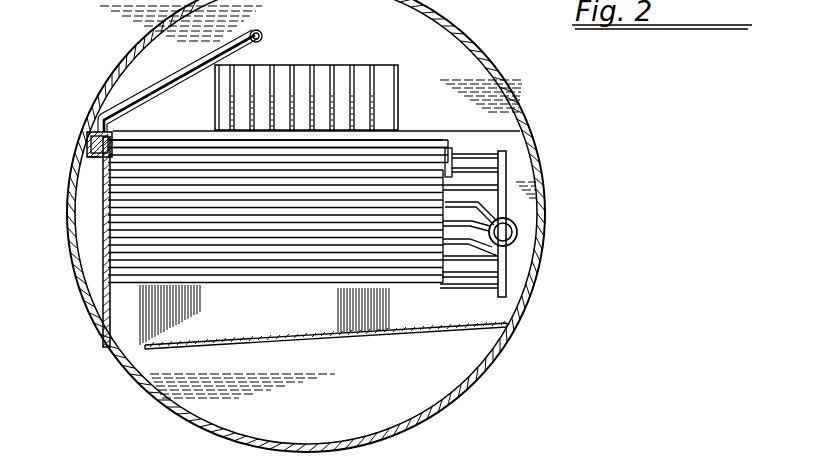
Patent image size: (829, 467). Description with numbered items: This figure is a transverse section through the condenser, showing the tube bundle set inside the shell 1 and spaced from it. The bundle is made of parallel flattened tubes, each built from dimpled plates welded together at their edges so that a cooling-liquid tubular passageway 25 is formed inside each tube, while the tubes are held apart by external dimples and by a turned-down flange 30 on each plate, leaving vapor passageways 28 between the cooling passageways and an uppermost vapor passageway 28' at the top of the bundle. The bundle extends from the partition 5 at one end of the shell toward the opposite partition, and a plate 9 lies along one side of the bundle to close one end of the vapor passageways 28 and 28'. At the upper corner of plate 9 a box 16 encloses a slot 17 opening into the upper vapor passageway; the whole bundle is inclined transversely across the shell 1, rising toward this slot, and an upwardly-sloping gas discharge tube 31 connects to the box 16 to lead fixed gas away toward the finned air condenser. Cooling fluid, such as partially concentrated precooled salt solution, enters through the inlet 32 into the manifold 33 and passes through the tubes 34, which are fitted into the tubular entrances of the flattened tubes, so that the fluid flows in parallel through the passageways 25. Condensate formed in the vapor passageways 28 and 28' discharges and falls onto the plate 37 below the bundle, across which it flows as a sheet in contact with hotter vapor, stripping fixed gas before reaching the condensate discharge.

The shell 1 is at (542, 153).
The partition 5 is at (325, 52).
The plate 9 is at (103, 228).
The box 16 is at (90, 157).
The slot 17 is at (110, 147).
The tubular passageway 25 is at (322, 284).
The vapor passageway 28 is at (278, 233).
The uppermost vapor passageway 28' is at (280, 133).
The turned-down flange 30 is at (240, 326).
The gas discharge tube 31 is at (112, 110).
The cooling fluid inlet 32 is at (517, 238).
The manifold 33 is at (507, 200).
The tubes 34 is at (466, 290).
The plate 37 is at (352, 335).